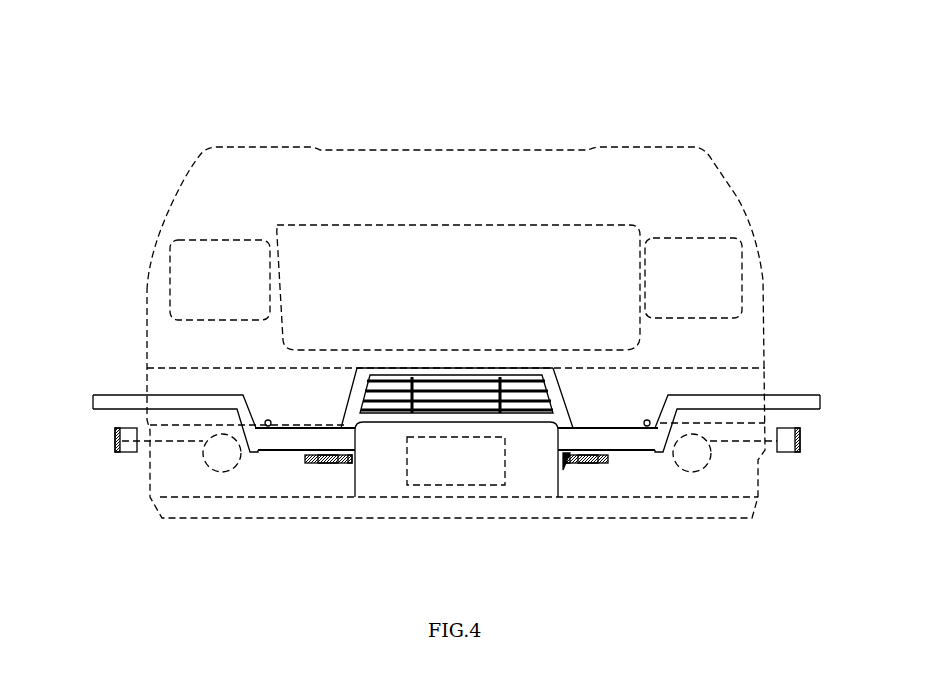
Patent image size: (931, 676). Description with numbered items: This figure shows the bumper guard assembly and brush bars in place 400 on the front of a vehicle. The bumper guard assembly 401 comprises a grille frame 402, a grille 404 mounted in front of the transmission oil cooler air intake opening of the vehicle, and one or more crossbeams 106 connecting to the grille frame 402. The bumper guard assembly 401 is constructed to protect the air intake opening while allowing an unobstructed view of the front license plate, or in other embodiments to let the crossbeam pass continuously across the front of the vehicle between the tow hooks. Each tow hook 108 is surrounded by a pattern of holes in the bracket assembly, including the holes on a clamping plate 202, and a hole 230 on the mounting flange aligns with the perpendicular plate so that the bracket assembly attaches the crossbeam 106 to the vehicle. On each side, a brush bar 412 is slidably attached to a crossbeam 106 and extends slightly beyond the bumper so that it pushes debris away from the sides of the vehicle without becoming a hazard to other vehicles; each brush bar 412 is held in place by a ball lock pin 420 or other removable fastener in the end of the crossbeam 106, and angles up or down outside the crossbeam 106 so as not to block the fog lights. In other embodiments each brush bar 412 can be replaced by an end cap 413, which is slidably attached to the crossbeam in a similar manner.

The bumper guard assembly and brush bars in place 400 is at (152, 58).
The bumper guard assembly 401 is at (654, 67).
The grille frame 402 is at (357, 364).
The grille 404 is at (436, 388).
The crossbeam 106 is at (317, 426).
The ball lock pin 420 is at (649, 419).
The brush bar 412 is at (180, 392).
The end cap 413 is at (127, 454).
The clamping plate 202 is at (308, 465).
The tow hook 108 is at (326, 465).
The hole 230 is at (351, 465).